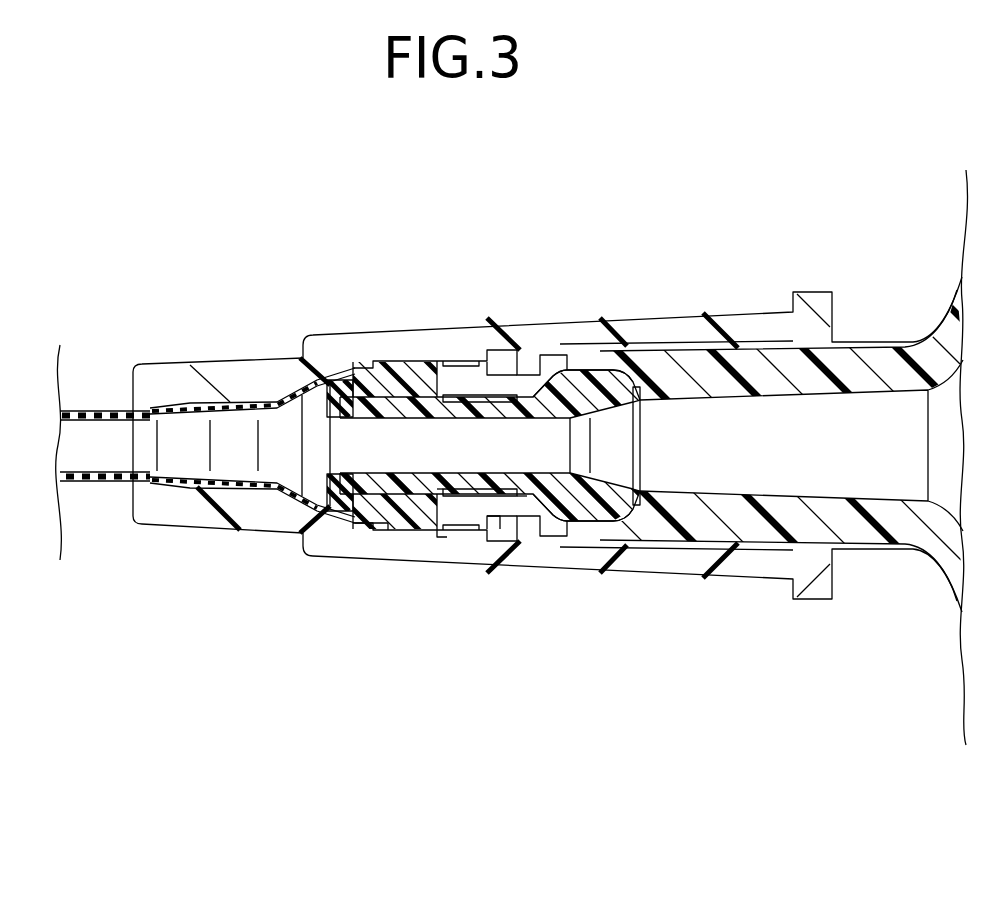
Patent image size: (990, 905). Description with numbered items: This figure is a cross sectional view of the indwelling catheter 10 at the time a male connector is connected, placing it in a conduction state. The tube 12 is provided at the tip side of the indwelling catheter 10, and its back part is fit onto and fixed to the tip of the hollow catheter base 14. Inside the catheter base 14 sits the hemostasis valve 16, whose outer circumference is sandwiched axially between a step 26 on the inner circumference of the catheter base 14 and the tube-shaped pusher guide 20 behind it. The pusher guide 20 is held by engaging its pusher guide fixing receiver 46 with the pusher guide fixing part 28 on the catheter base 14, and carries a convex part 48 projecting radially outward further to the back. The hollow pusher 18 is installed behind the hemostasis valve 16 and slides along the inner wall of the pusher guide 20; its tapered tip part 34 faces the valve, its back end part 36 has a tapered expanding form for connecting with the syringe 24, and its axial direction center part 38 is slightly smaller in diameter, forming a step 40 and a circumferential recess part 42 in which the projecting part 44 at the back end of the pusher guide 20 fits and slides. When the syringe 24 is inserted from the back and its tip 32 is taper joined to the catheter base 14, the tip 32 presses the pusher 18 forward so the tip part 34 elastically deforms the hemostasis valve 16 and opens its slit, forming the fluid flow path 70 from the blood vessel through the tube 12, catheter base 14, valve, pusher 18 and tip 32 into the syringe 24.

The indwelling catheter 10 is at (805, 254).
The tube 12 is at (88, 410).
The catheter base 14 is at (236, 346).
The hemostasis valve 16 is at (390, 355).
The pusher 18 is at (596, 359).
The pusher guide 20 is at (436, 546).
The syringe 24 is at (880, 559).
The step 26 is at (388, 530).
The pusher guide fixing part 28 is at (458, 358).
The tip of the syringe 32 is at (780, 525).
The tip part of the pusher 34 is at (352, 405).
The back end part of the pusher 36 is at (590, 522).
The axial direction center part 38 is at (496, 524).
The step 40 is at (440, 495).
The recess part 42 is at (480, 388).
The projecting part 44 is at (522, 497).
The pusher guide fixing receiver 46 is at (457, 358).
The convex part 48 is at (448, 396).
The fluid flow path 70 is at (630, 414).